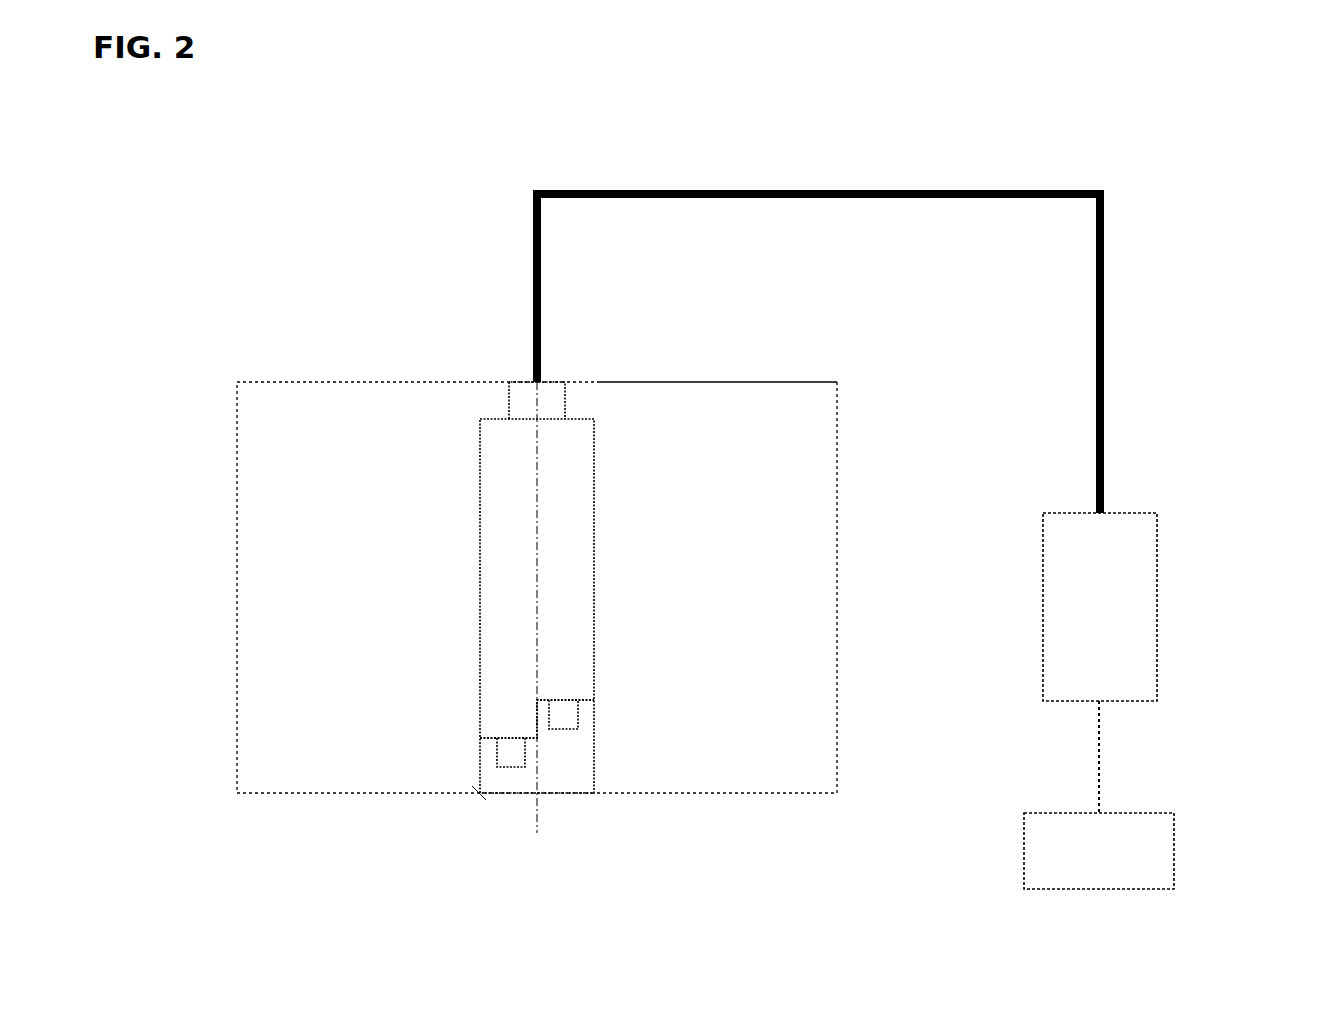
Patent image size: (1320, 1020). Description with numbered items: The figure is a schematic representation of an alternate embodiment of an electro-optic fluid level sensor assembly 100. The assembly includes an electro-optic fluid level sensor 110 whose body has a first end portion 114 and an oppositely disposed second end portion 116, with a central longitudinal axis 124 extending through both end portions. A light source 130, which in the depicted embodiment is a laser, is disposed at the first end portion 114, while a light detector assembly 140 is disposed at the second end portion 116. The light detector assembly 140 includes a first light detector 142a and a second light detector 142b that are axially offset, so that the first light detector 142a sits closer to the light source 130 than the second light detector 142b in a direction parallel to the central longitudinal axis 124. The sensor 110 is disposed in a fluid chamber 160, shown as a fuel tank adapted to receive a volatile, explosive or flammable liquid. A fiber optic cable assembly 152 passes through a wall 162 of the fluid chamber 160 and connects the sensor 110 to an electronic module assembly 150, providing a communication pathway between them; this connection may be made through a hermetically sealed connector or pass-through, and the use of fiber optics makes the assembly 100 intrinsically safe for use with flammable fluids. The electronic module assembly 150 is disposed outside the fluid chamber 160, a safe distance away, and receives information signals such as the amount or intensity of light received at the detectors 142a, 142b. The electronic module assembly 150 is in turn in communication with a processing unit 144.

The electro-optic fluid level sensor assembly 100 is at (388, 193).
The electro-optic fluid level sensor 110 is at (587, 607).
The first end portion 114 is at (594, 437).
The second end portion 116 is at (594, 775).
The central longitudinal axis 124 is at (538, 591).
The light source 130 is at (509, 398).
The light detector assembly 140 is at (478, 790).
The first light detector 142a is at (578, 720).
The second light detector 142b is at (497, 746).
The processing unit 144 is at (1174, 850).
The electronic module assembly 150 is at (1157, 566).
The fiber optic cable assembly 152 is at (848, 192).
The fluid chamber 160 is at (838, 437).
The wall 162 is at (727, 382).